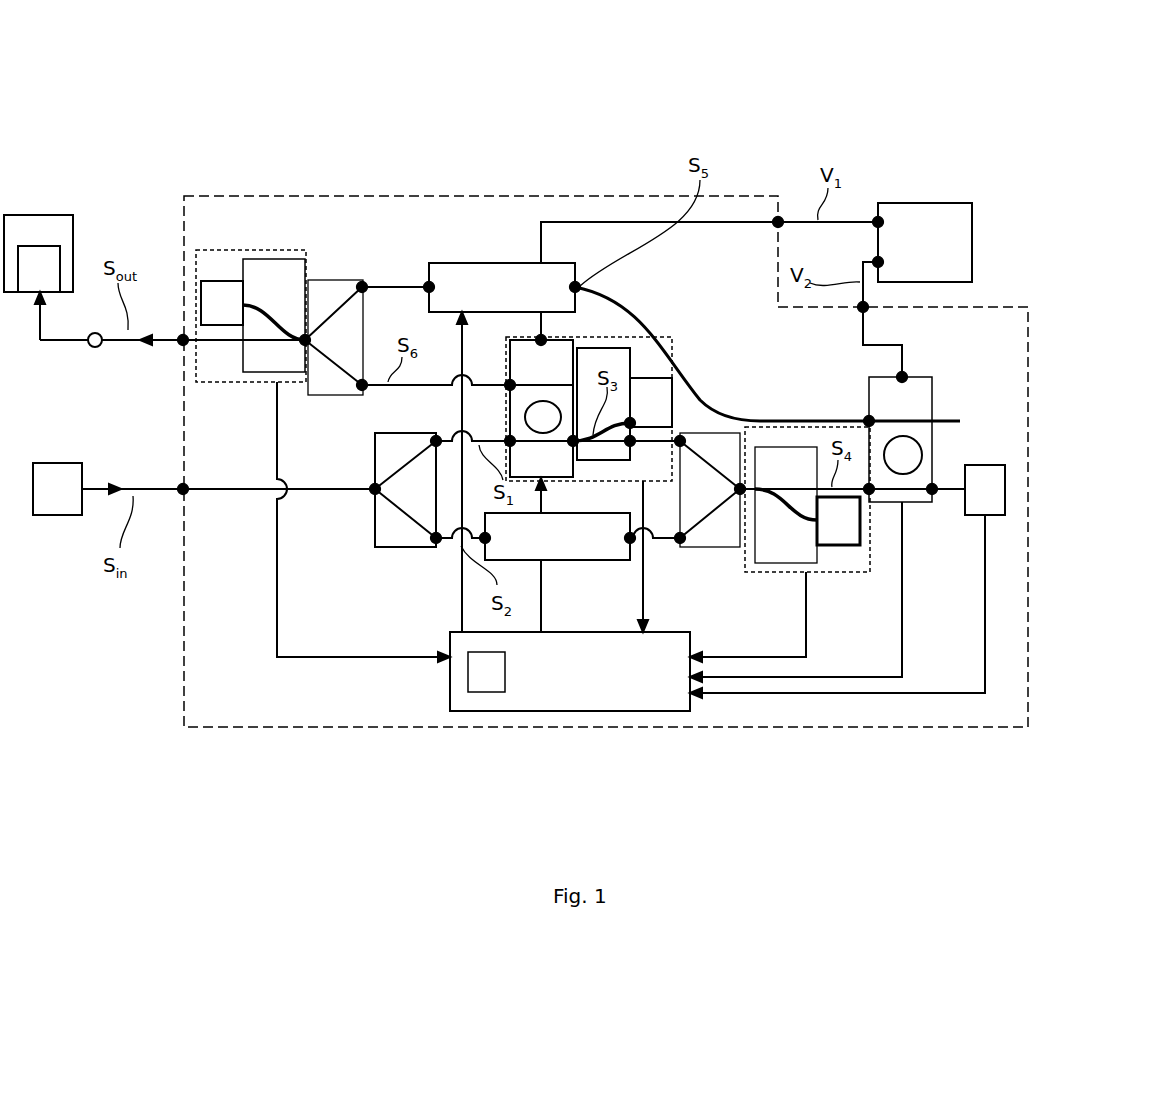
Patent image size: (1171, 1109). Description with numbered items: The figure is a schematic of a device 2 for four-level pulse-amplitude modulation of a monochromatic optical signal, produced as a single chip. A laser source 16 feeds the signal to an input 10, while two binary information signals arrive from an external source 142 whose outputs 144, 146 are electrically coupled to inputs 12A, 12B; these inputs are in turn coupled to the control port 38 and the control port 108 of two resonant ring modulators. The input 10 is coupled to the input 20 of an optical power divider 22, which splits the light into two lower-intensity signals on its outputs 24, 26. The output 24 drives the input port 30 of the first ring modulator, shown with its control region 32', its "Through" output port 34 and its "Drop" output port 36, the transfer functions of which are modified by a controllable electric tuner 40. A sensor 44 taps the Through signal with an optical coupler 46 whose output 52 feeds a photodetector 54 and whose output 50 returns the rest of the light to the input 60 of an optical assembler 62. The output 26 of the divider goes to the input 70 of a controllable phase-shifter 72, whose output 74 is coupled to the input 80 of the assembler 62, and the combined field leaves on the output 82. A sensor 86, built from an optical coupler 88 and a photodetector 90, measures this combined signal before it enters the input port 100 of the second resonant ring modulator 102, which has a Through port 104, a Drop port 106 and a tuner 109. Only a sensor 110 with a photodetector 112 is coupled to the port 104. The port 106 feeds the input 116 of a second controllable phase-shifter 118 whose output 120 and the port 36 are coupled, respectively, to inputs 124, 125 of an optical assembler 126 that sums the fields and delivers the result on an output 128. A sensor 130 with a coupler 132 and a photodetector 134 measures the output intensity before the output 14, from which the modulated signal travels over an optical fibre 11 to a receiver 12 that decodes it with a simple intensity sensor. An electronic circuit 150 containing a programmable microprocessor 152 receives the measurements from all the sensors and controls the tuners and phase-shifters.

The device for 4-PAM modulation 2 is at (178, 243).
The input 10 is at (182, 498).
The optical fibre 11 is at (90, 352).
The receiver 12 is at (52, 208).
The input 12A is at (778, 216).
The input 12B is at (870, 306).
The output 14 is at (180, 350).
The laser source 16 is at (57, 489).
The input 20 is at (373, 497).
The optical power divider 22 is at (397, 556).
The output 24 is at (434, 438).
The output 26 is at (436, 545).
The input port 30 is at (508, 438).
The control unit 32' is at (600, 384).
The output port 34 is at (570, 448).
The output port 36 is at (506, 382).
The control port 38 is at (560, 335).
The controllable electric tuner 40 is at (539, 462).
The sensor 44 is at (775, 372).
The optical coupler 46 is at (632, 345).
The output 50 is at (630, 448).
The output 52 is at (635, 422).
The photodetector 54 is at (648, 376).
The input 60 is at (679, 448).
The optical assembler 62 is at (730, 442).
The input 70 is at (490, 544).
The controllable phase-shifter 72 is at (550, 538).
The output 74 is at (635, 545).
The input 80 is at (682, 545).
The output 82 is at (741, 497).
The sensor 86 is at (813, 585).
The optical coupler 88 is at (773, 545).
The photodetector 90 is at (838, 545).
The input port 100 is at (872, 497).
The resonant ring modulator 102 is at (918, 395).
The output port 104 is at (935, 485).
The output port 106 is at (866, 416).
The control port 108 is at (899, 372).
The controllable electrical tuner 109 is at (920, 500).
The sensor 110 is at (1090, 475).
The photodetector 112 is at (985, 495).
The input 116 is at (578, 283).
The controllable phase-shifter 118 is at (538, 263).
The output 120 is at (484, 287).
The input 124 is at (410, 285).
The input 125 is at (362, 392).
The optical assembler 126 is at (340, 292).
The output 128 is at (308, 348).
The sensor 130 is at (345, 152).
The coupler 132 is at (285, 293).
The photodetector 134 is at (215, 293).
The source of binary electrical signals 142 is at (934, 195).
The output 144 is at (878, 216).
The output 146 is at (872, 262).
The electronic circuit 150 is at (468, 720).
The programmable microprocessor 152 is at (488, 668).